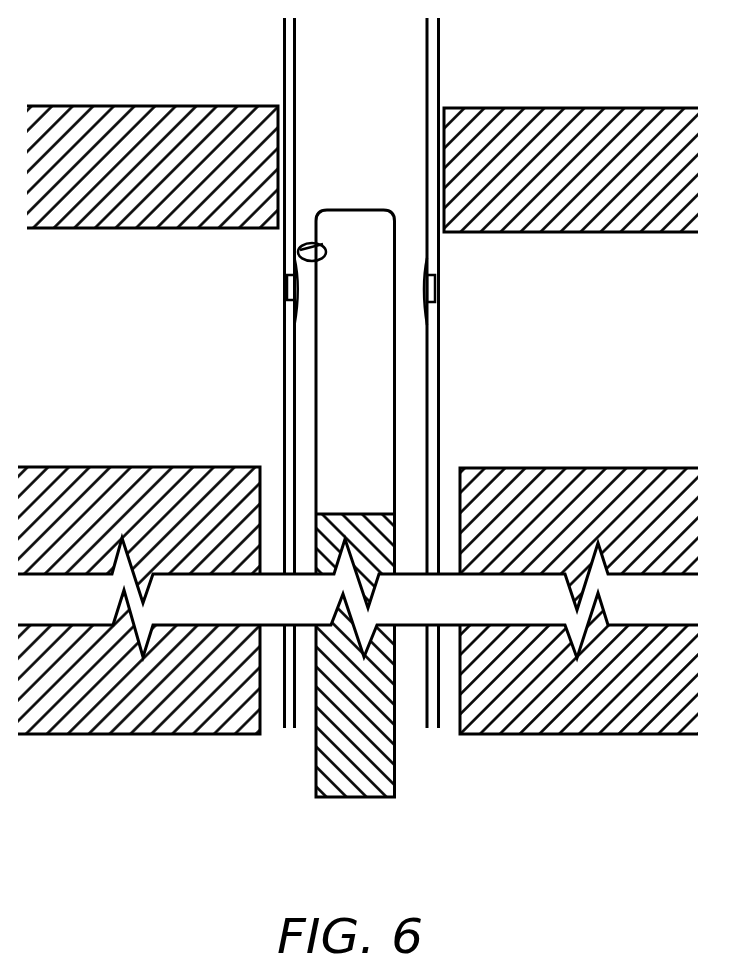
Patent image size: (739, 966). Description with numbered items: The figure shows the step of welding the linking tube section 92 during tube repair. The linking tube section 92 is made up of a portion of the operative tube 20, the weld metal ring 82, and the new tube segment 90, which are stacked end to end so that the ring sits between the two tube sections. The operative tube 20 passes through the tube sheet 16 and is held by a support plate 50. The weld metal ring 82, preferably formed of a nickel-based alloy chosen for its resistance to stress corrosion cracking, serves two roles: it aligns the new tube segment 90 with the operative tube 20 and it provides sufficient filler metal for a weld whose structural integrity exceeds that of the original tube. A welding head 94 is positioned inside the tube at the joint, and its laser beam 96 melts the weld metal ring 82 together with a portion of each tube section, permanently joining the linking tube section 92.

The tube sheet 16 is at (607, 503).
The operative tube 20 is at (435, 72).
The support plate 50 is at (605, 128).
The weld metal ring 82 is at (425, 272).
The new tube segment 90 is at (433, 370).
The linking tube section 92 is at (278, 240).
The welding head 94 is at (357, 222).
The laser beam 96 is at (309, 244).